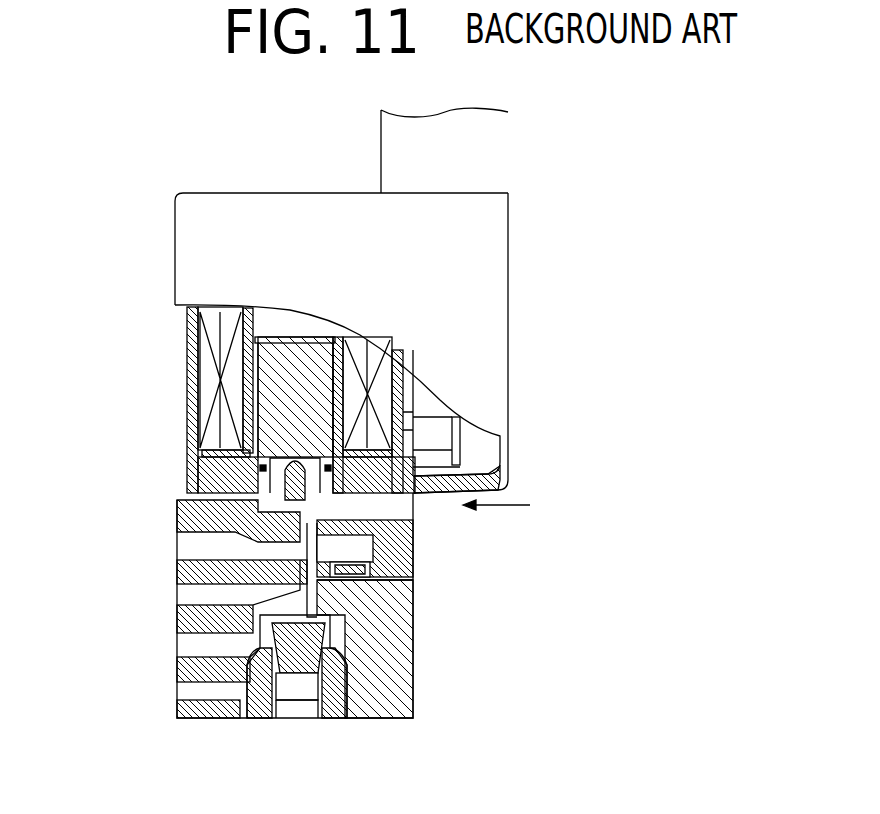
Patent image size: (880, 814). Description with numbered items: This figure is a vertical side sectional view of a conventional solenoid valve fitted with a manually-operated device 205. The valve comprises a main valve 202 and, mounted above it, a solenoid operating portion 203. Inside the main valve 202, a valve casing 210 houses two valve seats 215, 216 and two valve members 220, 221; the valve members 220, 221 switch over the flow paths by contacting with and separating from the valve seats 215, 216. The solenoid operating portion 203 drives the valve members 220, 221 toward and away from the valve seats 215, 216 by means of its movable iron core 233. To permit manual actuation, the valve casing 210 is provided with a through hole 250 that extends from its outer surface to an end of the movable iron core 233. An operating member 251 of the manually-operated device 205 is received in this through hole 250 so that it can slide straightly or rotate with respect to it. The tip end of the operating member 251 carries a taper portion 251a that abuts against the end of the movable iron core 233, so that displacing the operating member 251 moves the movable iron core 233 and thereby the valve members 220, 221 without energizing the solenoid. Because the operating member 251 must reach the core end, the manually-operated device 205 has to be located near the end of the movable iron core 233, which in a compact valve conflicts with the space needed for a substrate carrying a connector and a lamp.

The main valve 202 is at (300, 651).
The solenoid operating portion 203 is at (282, 304).
The manually-operated device 205 is at (529, 505).
The valve casing 210 is at (385, 690).
The valve seat 215 is at (250, 520).
The valve seat 216 is at (310, 625).
The valve member 220 is at (250, 473).
The valve member 221 is at (220, 701).
The movable iron core 233 is at (290, 380).
The through hole 250 is at (417, 603).
The operating member 251 is at (417, 542).
The taper portion 251a is at (400, 562).